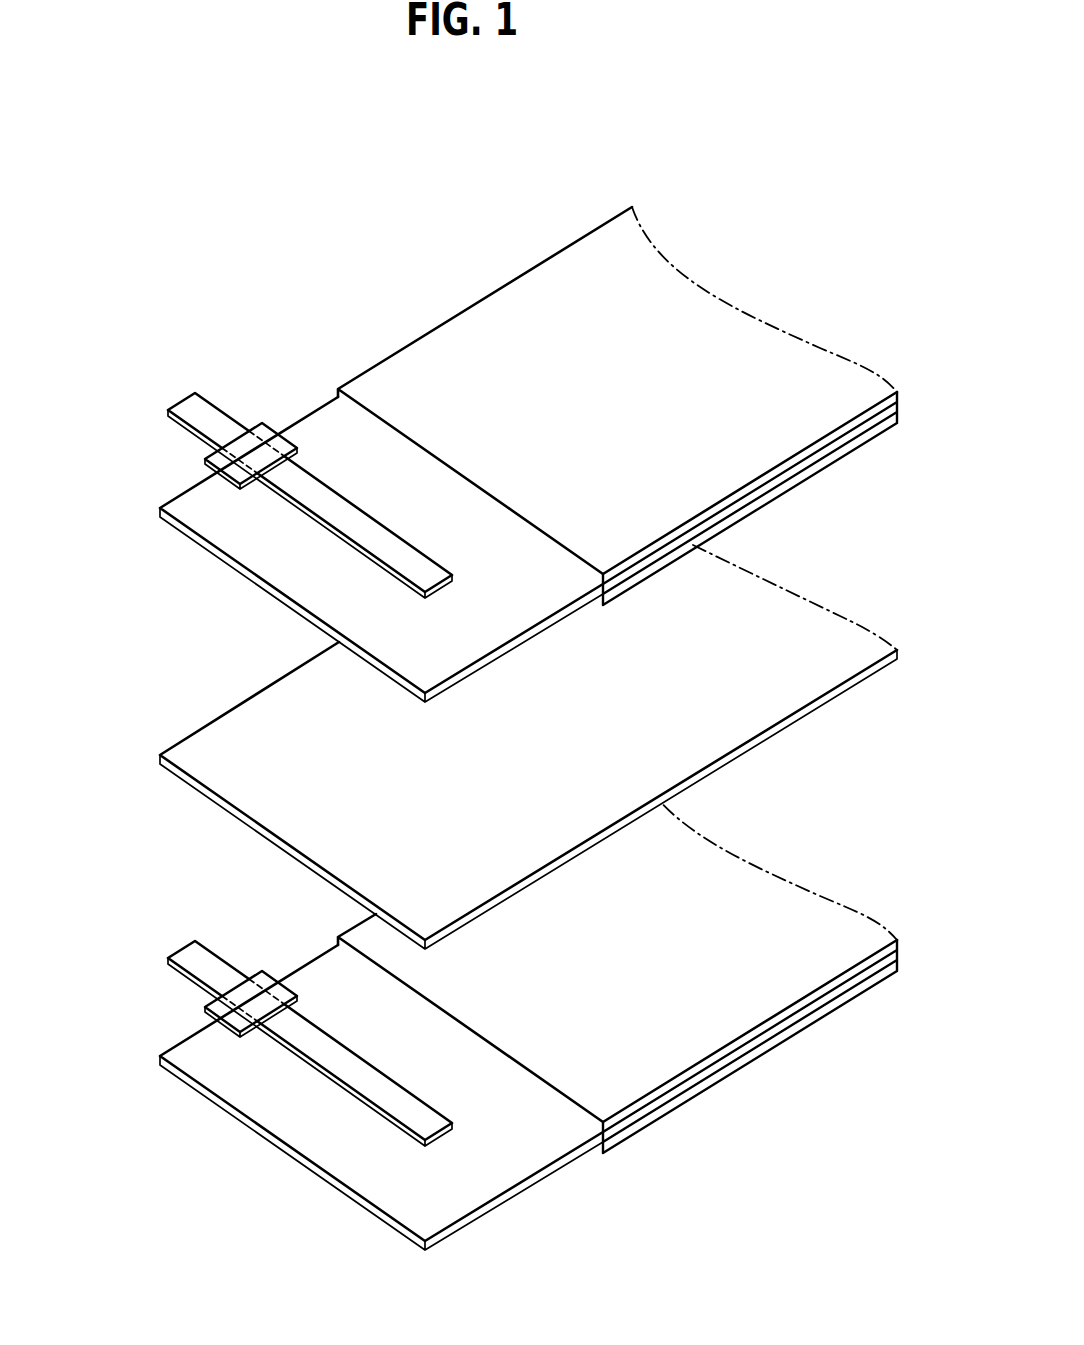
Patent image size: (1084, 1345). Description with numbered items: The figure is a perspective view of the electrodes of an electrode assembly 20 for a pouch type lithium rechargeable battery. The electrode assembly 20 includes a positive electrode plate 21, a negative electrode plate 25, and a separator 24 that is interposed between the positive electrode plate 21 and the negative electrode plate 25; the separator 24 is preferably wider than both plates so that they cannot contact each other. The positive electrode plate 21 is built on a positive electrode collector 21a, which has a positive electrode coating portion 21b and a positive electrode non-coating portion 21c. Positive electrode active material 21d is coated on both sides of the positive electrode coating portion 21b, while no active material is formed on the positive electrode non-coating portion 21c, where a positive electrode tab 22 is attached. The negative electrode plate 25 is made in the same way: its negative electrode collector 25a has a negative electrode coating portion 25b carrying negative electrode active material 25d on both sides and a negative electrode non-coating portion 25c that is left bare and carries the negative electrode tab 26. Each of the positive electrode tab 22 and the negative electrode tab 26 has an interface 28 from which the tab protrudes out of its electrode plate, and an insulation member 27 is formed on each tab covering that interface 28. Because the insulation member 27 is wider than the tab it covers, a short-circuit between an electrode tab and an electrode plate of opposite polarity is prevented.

The electrode assembly 20 is at (173, 206).
The positive electrode plate 21 is at (188, 560).
The positive electrode collector 21a is at (262, 582).
The positive electrode coating portion 21b is at (733, 330).
The positive electrode non-coating portion 21c is at (401, 648).
The positive electrode active material 21d is at (897, 392).
The positive electrode tab 22 is at (187, 408).
The separator 24 is at (193, 750).
The negative electrode plate 25 is at (192, 1106).
The negative electrode collector 25a is at (305, 1157).
The negative electrode coating portion 25b is at (805, 900).
The negative electrode non-coating portion 25c is at (405, 1196).
The negative electrode active material 25d is at (898, 940).
The negative electrode tab 26 is at (187, 952).
The insulation member 27 is at (265, 425).
The interface 28 is at (203, 470).